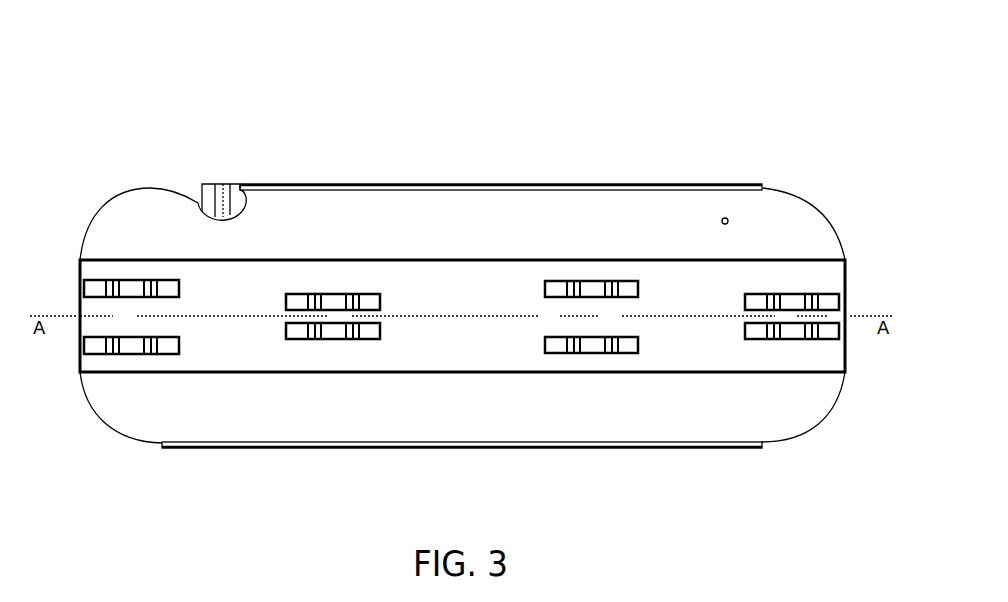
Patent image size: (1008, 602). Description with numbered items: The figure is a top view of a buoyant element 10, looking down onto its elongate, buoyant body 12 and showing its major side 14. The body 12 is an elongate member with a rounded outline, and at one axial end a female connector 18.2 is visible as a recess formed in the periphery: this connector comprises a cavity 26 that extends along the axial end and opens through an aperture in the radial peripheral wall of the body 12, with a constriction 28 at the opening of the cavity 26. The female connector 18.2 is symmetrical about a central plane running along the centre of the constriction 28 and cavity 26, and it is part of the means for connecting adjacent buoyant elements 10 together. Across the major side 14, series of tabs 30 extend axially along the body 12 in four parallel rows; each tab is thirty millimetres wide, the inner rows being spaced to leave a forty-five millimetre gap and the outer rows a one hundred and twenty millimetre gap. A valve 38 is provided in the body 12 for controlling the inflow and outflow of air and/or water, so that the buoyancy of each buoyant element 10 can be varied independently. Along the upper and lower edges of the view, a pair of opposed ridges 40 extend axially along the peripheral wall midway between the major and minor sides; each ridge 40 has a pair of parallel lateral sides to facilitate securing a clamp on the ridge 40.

The buoyant element 10 is at (497, 92).
The buoyant body 12 is at (530, 235).
The major side 14 is at (848, 320).
The female connector 18.2 is at (230, 184).
The cavity 26 is at (213, 185).
The constriction 28 is at (193, 197).
The tabs 30 is at (591, 345).
The valve 38 is at (720, 221).
The ridge 40 is at (660, 184).